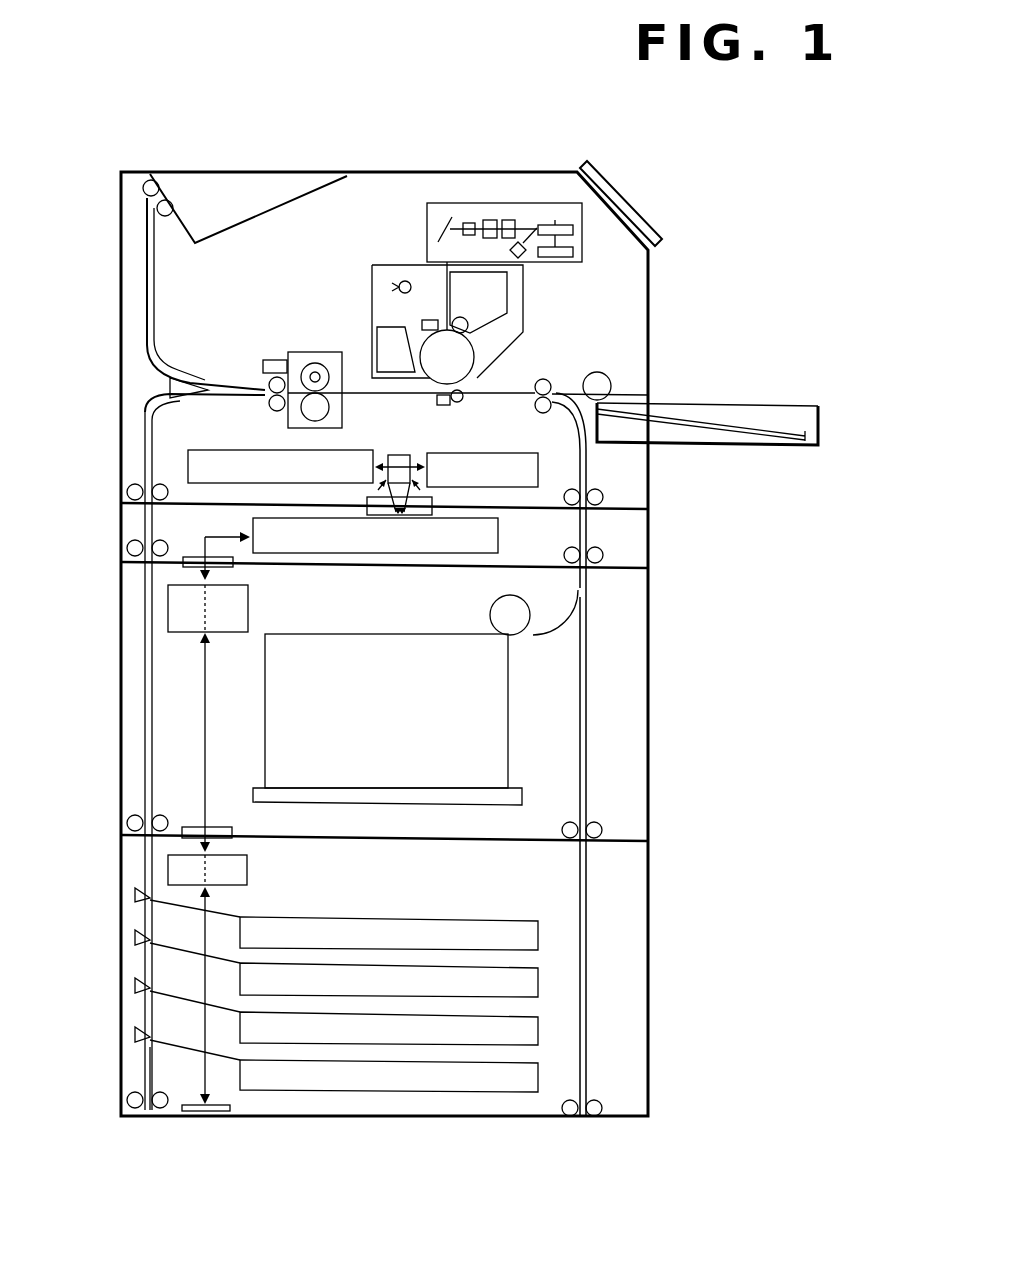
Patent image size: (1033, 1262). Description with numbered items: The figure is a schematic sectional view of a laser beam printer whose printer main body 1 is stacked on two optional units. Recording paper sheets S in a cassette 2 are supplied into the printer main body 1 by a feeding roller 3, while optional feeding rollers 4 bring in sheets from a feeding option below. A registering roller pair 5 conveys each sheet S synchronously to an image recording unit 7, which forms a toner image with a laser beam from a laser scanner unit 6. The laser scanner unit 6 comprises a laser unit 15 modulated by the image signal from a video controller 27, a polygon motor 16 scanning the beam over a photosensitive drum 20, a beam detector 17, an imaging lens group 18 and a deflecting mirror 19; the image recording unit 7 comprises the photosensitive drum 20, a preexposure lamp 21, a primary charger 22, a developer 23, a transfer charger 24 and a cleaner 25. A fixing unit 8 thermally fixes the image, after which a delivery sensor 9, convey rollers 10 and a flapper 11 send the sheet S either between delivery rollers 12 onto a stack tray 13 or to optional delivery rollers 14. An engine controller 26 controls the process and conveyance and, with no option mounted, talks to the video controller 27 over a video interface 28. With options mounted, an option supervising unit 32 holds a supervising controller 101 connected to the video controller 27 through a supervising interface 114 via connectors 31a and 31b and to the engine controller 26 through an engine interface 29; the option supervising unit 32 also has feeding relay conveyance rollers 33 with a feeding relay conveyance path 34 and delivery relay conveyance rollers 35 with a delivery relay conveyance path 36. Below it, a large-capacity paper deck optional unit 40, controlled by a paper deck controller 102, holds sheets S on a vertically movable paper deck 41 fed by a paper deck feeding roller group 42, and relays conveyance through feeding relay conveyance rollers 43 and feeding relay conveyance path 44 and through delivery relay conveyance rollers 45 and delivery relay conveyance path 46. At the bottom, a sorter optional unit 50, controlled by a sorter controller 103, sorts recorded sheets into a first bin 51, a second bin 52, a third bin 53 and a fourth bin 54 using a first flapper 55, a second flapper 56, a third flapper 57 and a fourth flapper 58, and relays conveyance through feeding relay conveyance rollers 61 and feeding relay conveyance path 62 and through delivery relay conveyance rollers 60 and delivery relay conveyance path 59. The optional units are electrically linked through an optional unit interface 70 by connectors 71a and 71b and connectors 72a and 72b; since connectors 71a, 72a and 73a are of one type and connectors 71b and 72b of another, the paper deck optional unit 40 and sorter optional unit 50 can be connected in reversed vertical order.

The laser beam printer main body 1 is at (375, 172).
The cassette 2 is at (805, 405).
The feeding roller 3 is at (612, 380).
The optional feeding rollers 4 is at (605, 492).
The registering roller pair 5 is at (550, 380).
The laser scanner unit 6 is at (545, 203).
The image recording unit 7 is at (400, 262).
The fixing unit 8 is at (315, 352).
The delivery sensor 9 is at (270, 362).
The convey rollers 10 is at (265, 383).
The flapper 11 is at (188, 397).
The delivery rollers 12 is at (157, 183).
The stack tray 13 is at (243, 218).
The optional delivery rollers 14 is at (128, 490).
The laser unit 15 is at (527, 257).
The polygon motor 16 is at (650, 255).
The beam detector 17 is at (470, 222).
The imaging lens group 18 is at (490, 220).
The deflecting mirror 19 is at (440, 220).
The photosensitive drum 20 is at (475, 360).
The preexposure lamp 21 is at (393, 287).
The primary charger 22 is at (420, 322).
The developer 23 is at (500, 292).
The transfer charger 24 is at (462, 405).
The cleaner 25 is at (377, 340).
The engine controller 26 is at (540, 463).
The video controller 27 is at (205, 447).
The video interface 28 is at (399, 452).
The engine interface 29 is at (428, 478).
The connector 31a is at (365, 510).
The connector 31b is at (440, 513).
The option supervising unit 32 is at (648, 528).
The feeding relay conveyance rollers 33 is at (606, 556).
The feeding relay conveyance path 34 is at (648, 506).
The delivery relay conveyance rollers 35 is at (128, 547).
The delivery relay conveyance path 36 is at (148, 516).
The large-capacity paper deck optional unit 40 is at (648, 664).
The paper deck 41 is at (470, 806).
The paper deck feeding roller group 42 is at (488, 617).
The feeding relay conveyance rollers 43 is at (606, 824).
The feeding relay conveyance path 44 is at (588, 722).
The delivery relay conveyance rollers 45 is at (130, 817).
The delivery relay conveyance path 46 is at (148, 655).
The sorter optional unit 50 is at (648, 942).
The first bin 51 is at (538, 928).
The second bin 52 is at (538, 975).
The third bin 53 is at (538, 1032).
The fourth bin 54 is at (538, 1075).
The first flapper 55 is at (135, 894).
The second flapper 56 is at (135, 937).
The third flapper 57 is at (135, 985).
The fourth flapper 58 is at (135, 1034).
The delivery relay conveyance path 59 is at (150, 1063).
The delivery relay conveyance rollers 60 is at (128, 1098).
The feeding relay conveyance rollers 61 is at (606, 1102).
The feeding relay conveyance path 62 is at (588, 1000).
The optional unit interface 70 is at (223, 537).
The connector 71a is at (233, 563).
The connector 71b is at (248, 605).
The connector 72a is at (232, 833).
The connector 72b is at (247, 870).
The connector 73a is at (235, 1113).
The supervising controller 101 is at (498, 545).
The paper deck controller 102 is at (168, 606).
The sorter controller 103 is at (168, 866).
The supervising interface 114 is at (374, 480).
The recording paper sheet S is at (690, 425).